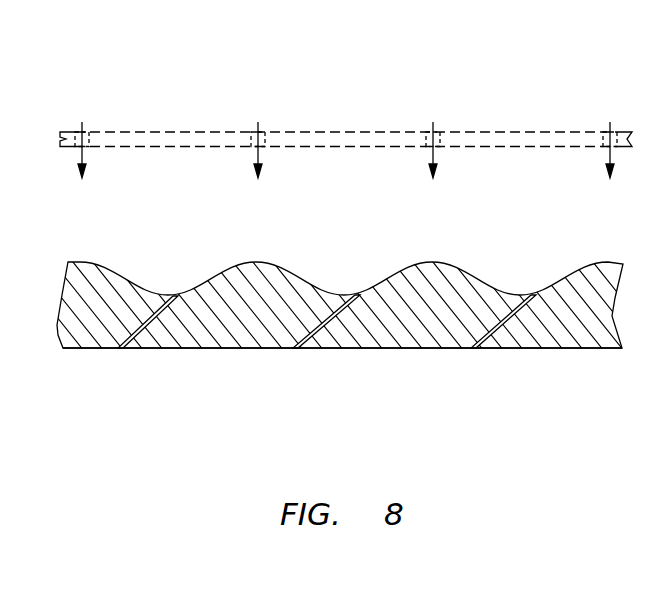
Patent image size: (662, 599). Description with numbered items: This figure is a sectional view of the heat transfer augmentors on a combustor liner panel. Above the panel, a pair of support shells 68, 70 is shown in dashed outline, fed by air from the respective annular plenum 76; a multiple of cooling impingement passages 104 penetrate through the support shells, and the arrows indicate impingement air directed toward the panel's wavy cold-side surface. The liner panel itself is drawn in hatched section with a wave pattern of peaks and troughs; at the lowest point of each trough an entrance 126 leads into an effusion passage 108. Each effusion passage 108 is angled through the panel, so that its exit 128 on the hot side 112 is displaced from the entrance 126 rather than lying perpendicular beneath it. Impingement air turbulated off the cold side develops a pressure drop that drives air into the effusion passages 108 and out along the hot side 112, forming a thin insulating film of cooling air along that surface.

The cooling impingement passages 104 is at (258, 136).
The annular plenum 76 is at (346, 99).
The support shell 68 is at (346, 99).
The support shell 70 is at (623, 139).
The entrance 126 is at (175, 294).
The exit 128 is at (123, 349).
The effusion passages 108 is at (143, 326).
The hot side 112 is at (395, 348).